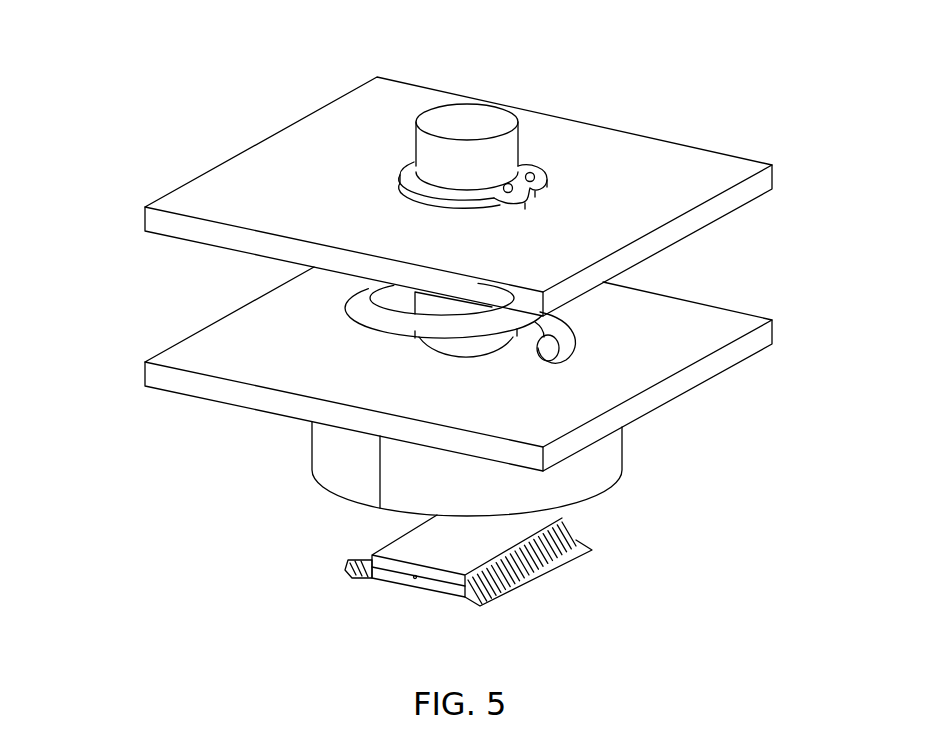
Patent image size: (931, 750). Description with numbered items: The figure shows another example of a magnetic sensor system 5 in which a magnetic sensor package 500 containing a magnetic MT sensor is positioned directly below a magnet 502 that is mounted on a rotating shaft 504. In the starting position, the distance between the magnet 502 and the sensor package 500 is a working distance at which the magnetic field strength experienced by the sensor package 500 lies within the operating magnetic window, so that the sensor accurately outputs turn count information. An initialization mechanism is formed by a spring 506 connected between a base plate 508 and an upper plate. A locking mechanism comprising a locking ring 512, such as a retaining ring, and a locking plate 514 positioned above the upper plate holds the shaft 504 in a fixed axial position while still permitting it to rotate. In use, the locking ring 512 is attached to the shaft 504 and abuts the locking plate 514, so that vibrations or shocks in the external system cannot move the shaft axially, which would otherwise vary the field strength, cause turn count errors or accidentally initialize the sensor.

The magnetic sensor system 5 is at (135, 132).
The magnetic sensor package 500 is at (543, 578).
The magnet 502 is at (318, 450).
The rotating shaft 504 is at (480, 122).
The spring 506 is at (363, 309).
The base plate 508 is at (708, 365).
The locking ring 512 is at (403, 184).
The locking plate 514 is at (730, 154).